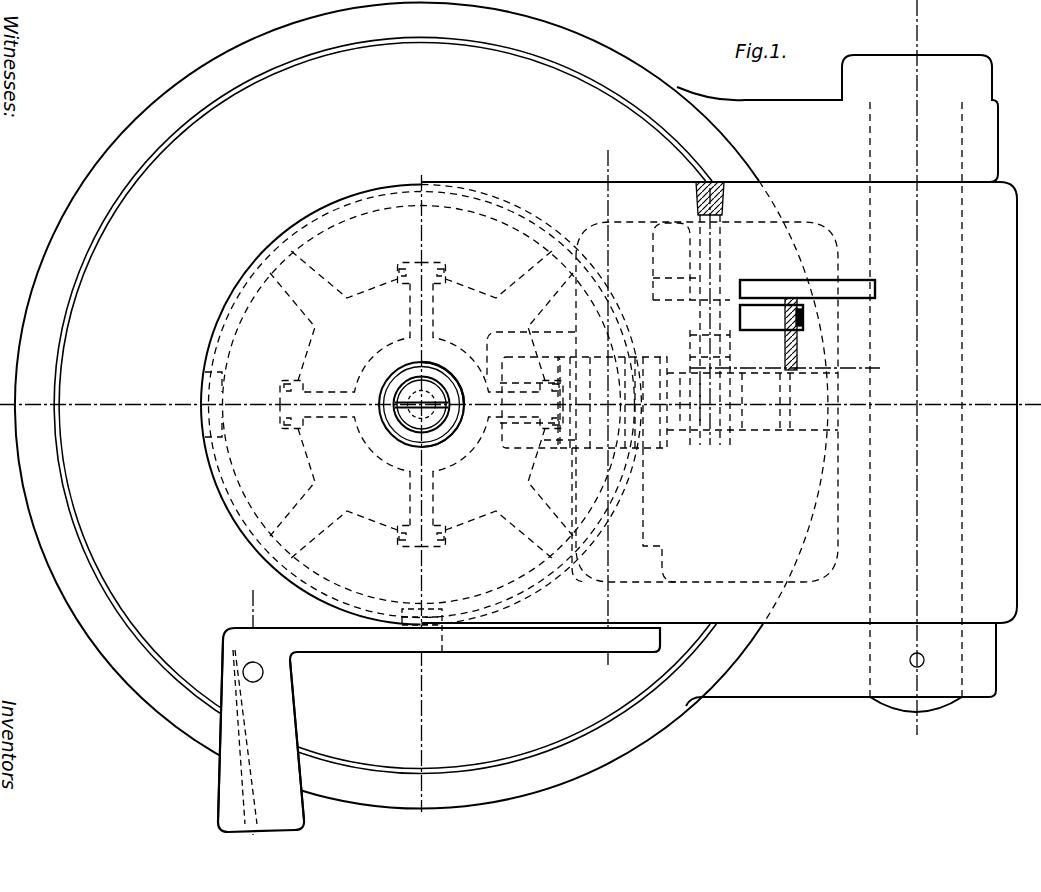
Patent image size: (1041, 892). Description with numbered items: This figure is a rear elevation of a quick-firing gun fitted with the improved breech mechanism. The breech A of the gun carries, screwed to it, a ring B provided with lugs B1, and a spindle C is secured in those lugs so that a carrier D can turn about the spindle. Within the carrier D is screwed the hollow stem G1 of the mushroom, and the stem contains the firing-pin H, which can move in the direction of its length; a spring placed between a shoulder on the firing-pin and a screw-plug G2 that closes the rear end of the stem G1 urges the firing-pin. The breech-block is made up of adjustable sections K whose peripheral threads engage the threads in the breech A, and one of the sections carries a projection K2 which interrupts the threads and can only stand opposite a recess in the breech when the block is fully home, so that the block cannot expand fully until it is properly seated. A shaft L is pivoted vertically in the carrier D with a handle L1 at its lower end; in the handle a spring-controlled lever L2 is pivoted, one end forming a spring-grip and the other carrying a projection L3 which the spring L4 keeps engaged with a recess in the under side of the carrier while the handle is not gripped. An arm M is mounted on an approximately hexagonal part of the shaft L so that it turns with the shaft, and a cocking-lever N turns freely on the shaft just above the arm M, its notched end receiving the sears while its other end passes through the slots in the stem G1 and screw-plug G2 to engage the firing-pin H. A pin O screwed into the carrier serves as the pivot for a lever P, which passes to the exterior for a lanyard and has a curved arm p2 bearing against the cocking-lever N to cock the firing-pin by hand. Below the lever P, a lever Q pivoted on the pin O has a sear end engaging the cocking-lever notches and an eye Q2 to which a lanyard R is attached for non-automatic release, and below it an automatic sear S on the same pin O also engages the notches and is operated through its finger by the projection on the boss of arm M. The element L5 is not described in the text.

The breech A is at (720, 362).
The ring B is at (421, 406).
The lugs B1 is at (837, 383).
The spindle C is at (962, 588).
The carrier D is at (421, 404).
The firing-pin H is at (402, 449).
The stem G1 is at (443, 377).
The screw-plug G2 is at (449, 422).
The adjustable sections K is at (305, 280).
The projection K2 is at (210, 382).
The cocking-lever N is at (553, 340).
The arm M is at (698, 402).
The shaft L is at (655, 552).
The handle L1 is at (287, 722).
The spring-controlled lever L2 is at (303, 779).
The projection L3 is at (439, 726).
The spring L4 is at (233, 787).
The lever pad L5 is at (396, 604).
The pin O is at (722, 246).
The curved arm p2 is at (691, 261).
The lever P is at (807, 289).
The lever Q is at (771, 317).
The eye Q2 is at (804, 318).
The lanyard R is at (798, 369).
The automatic sear S is at (731, 350).